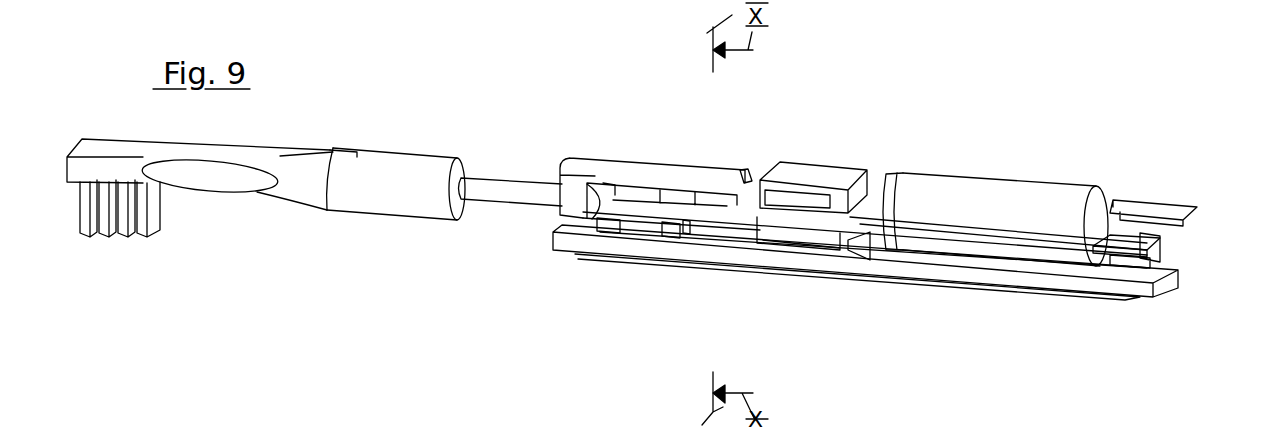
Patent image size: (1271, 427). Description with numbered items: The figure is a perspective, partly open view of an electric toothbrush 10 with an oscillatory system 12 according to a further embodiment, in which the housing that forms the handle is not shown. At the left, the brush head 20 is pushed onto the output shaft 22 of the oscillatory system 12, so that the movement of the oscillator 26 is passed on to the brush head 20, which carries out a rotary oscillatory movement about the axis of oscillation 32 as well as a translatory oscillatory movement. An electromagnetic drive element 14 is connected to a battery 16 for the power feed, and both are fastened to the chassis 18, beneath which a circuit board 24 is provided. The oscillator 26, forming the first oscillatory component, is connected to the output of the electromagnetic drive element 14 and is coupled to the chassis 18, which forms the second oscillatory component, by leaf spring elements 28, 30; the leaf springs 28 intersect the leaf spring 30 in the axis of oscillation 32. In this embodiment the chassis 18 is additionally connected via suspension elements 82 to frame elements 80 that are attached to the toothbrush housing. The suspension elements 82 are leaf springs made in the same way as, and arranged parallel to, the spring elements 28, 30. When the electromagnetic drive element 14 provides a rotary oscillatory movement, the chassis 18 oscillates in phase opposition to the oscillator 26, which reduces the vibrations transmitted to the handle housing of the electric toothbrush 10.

The electric toothbrush 10 is at (397, 273).
The oscillatory system 12 is at (670, 150).
The electromagnetic drive element 14 is at (837, 165).
The battery 16 is at (1008, 200).
The chassis 18 is at (567, 245).
The brush head 20 is at (292, 170).
The output shaft 22 is at (508, 193).
The circuit board 24 is at (638, 262).
The oscillator 26 is at (610, 172).
The leaf spring elements 28 is at (608, 238).
The leaf spring element 30 is at (640, 190).
The axis of oscillation 32 is at (5, 157).
The frame elements 80 is at (1138, 232).
The suspension elements 82 is at (646, 222).